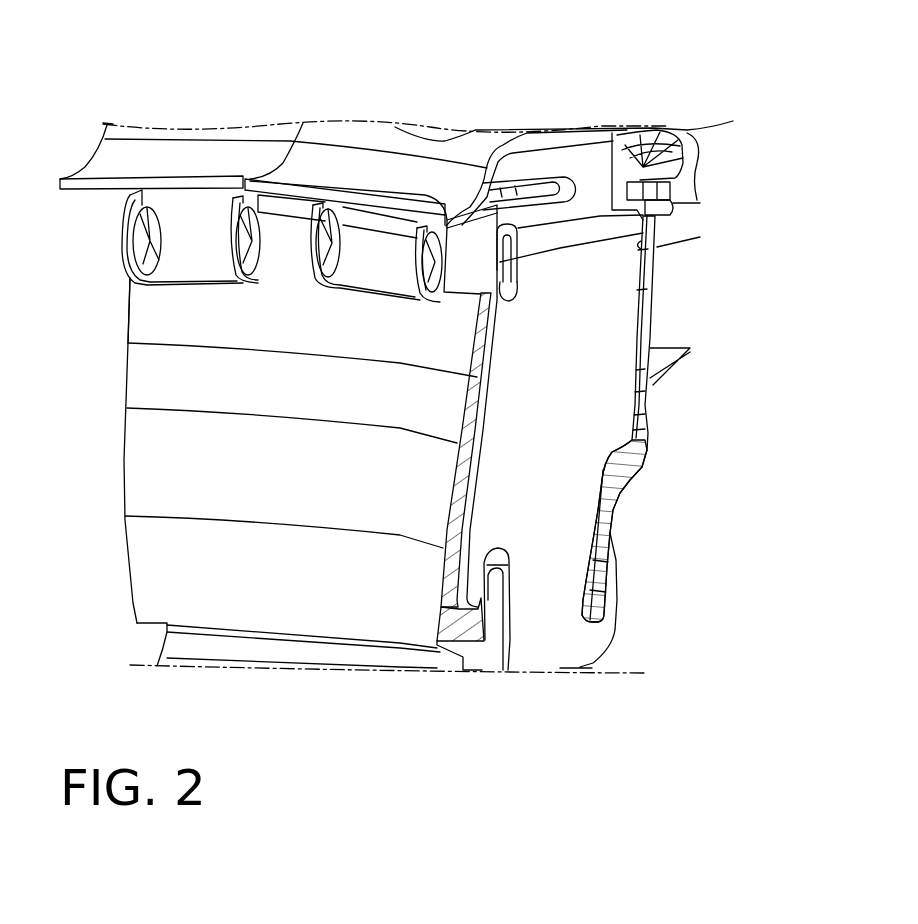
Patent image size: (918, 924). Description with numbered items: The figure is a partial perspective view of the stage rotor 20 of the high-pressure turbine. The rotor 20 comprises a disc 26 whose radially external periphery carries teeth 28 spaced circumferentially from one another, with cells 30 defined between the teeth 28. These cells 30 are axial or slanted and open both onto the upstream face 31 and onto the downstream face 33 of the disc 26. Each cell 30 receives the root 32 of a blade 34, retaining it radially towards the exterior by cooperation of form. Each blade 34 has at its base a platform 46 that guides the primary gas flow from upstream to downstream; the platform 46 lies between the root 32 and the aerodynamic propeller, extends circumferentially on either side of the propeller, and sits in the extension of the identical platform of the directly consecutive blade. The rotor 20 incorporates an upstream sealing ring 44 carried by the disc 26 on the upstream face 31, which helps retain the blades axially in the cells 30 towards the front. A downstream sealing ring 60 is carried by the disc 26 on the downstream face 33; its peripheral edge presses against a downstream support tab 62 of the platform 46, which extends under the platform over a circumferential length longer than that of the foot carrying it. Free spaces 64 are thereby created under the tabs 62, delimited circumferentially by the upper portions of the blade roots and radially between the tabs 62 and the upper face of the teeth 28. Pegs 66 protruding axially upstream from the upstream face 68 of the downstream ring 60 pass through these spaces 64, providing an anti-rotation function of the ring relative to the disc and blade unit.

The stage rotor 20 is at (514, 690).
The disc 26 is at (547, 563).
The teeth 28 is at (152, 252).
The cells 30 is at (160, 246).
The upstream face 31 is at (490, 393).
The root 32 is at (211, 256).
The downstream face 33 is at (610, 528).
The blade 34 is at (182, 127).
The upstream sealing ring 44 is at (234, 599).
The platform 46 is at (535, 132).
The downstream sealing ring 60 is at (650, 449).
The tab 62 is at (690, 167).
The free spaces 64 is at (690, 183).
The pegs 66 is at (657, 201).
The upstream face 68 is at (655, 242).